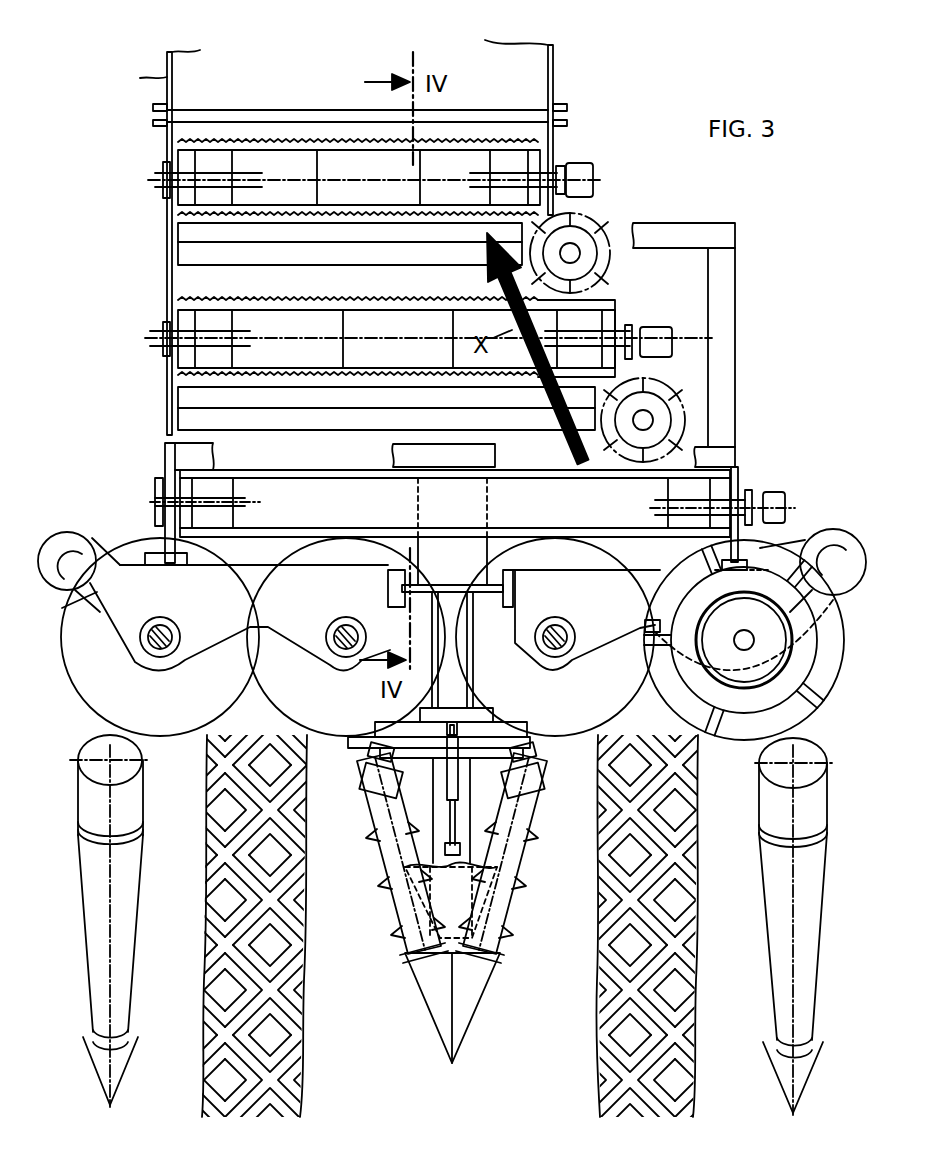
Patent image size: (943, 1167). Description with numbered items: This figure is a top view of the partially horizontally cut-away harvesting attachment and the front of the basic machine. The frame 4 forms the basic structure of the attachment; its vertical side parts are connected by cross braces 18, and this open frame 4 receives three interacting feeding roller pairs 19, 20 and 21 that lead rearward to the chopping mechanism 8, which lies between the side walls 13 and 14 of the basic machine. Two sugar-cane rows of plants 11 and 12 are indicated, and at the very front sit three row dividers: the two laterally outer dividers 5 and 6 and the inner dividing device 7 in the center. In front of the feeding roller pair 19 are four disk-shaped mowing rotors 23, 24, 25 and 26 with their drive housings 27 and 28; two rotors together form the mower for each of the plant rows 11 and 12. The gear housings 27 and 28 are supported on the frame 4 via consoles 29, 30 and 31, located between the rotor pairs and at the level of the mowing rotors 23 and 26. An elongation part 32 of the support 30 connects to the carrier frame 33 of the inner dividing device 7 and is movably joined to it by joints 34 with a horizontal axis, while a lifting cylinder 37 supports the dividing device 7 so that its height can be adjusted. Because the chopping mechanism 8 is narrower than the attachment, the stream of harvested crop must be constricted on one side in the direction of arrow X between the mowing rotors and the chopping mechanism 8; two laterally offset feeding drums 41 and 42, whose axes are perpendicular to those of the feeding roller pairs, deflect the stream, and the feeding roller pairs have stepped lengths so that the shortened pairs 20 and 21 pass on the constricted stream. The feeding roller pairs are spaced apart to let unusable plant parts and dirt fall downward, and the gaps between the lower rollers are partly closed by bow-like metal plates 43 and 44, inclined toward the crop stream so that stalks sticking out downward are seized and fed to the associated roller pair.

The frame 4 is at (752, 318).
The outer divider 5 is at (805, 965).
The outer divider 6 is at (95, 932).
The inner dividing device 7 is at (465, 1020).
The chopping mechanism 8 is at (268, 85).
The sugar-cane row of plants 11 is at (275, 1005).
The sugar-cane row of plants 12 is at (615, 995).
The side wall 13 is at (167, 78).
The side wall 14 is at (553, 92).
The cross brace 18 is at (680, 240).
The feeding roller pair 19 is at (210, 488).
The feeding roller pair 20 is at (205, 330).
The feeding roller pair 21 is at (200, 165).
The mowing rotor 23 is at (160, 637).
The mowing rotor 24 is at (346, 637).
The mowing rotor 25 is at (555, 637).
The mowing rotor 26 is at (744, 640).
The drive housing 27 is at (70, 623).
The drive housing 28 is at (598, 617).
The console 29 is at (165, 512).
The console 30 is at (463, 548).
The console 31 is at (775, 545).
The elongation part 32 is at (455, 690).
The carrier frame 33 is at (467, 815).
The joint 34 is at (540, 745).
The lifting cylinder 37 is at (448, 780).
The feeding drum 41 is at (665, 420).
The feeding drum 42 is at (588, 258).
The bow-like metal plate 43 is at (190, 398).
The bow-like metal plate 44 is at (200, 248).